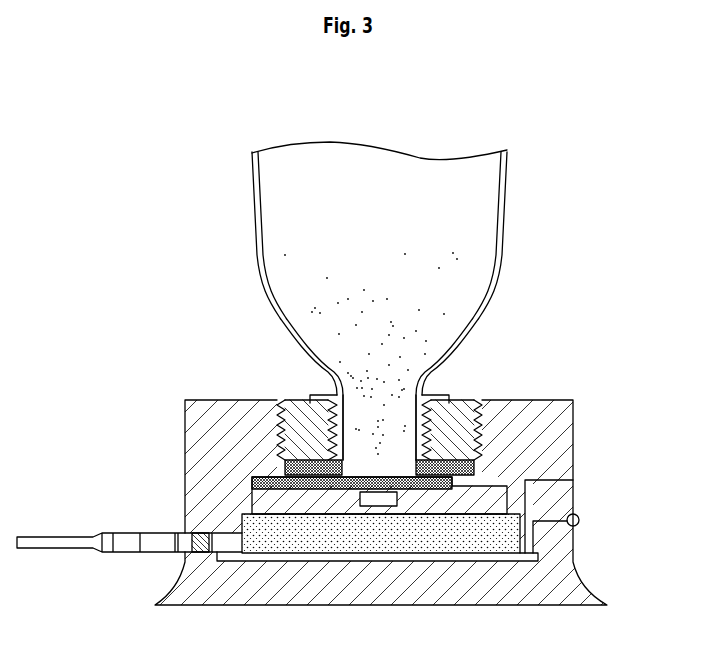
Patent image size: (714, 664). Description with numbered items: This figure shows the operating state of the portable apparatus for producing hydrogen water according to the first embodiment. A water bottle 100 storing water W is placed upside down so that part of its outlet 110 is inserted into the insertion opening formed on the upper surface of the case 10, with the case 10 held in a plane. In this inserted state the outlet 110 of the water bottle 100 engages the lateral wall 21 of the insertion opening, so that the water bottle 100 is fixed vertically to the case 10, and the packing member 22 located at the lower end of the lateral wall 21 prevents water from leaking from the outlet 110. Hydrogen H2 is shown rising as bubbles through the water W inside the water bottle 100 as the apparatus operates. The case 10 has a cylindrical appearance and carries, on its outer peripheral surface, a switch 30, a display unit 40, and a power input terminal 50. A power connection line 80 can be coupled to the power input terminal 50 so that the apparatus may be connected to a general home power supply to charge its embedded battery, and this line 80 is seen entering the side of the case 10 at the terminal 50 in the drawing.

The case 10 is at (593, 412).
The lateral wall 21 is at (300, 400).
The packing member 22 is at (284, 468).
The switch 30 is at (575, 481).
The display unit 40 is at (580, 520).
The power input terminal 50 is at (200, 548).
The power connection line 80 is at (155, 543).
The water bottle 100 is at (507, 196).
The outlet 110 is at (423, 397).
The water W is at (422, 191).
The hydrogen H2 is at (300, 280).